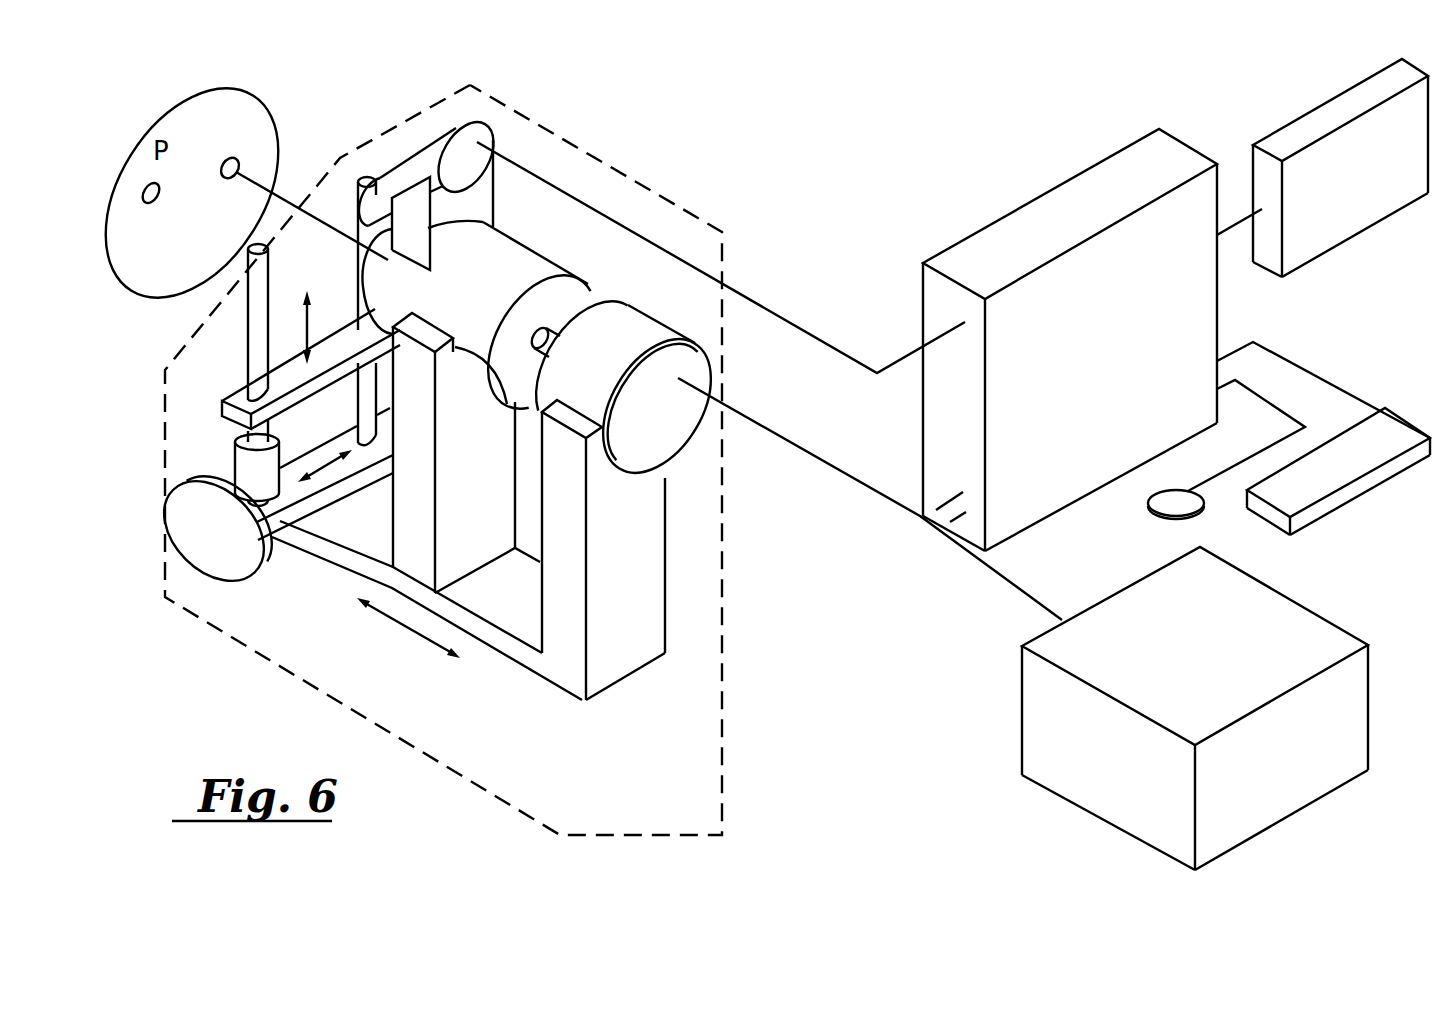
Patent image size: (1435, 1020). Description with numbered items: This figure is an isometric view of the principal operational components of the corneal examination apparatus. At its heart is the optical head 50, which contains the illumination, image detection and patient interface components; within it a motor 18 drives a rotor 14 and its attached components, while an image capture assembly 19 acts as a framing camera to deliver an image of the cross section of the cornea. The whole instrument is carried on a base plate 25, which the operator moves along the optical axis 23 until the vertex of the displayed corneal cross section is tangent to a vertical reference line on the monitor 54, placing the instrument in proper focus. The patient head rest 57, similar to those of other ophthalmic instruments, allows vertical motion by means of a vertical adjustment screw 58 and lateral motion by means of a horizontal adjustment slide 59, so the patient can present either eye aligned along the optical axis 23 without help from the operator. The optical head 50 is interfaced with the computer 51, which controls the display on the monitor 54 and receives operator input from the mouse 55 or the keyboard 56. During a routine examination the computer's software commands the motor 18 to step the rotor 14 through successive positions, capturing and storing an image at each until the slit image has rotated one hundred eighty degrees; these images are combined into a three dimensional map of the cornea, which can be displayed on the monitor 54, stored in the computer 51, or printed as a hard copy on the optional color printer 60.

The rotor 14 is at (517, 260).
The motor 18 is at (668, 427).
The image capture assembly 19 is at (458, 145).
The optical axis 23 is at (322, 226).
The base plate 25 is at (555, 672).
The optical head 50 is at (730, 608).
The computer 51 is at (1075, 198).
The monitor 54 is at (1315, 633).
The mouse 55 is at (1395, 422).
The keyboard 56 is at (1161, 507).
The patient head rest 57 is at (249, 330).
The vertical adjustment screw 58 is at (247, 468).
The horizontal adjustment slide 59 is at (235, 560).
The printer 60 is at (1313, 117).